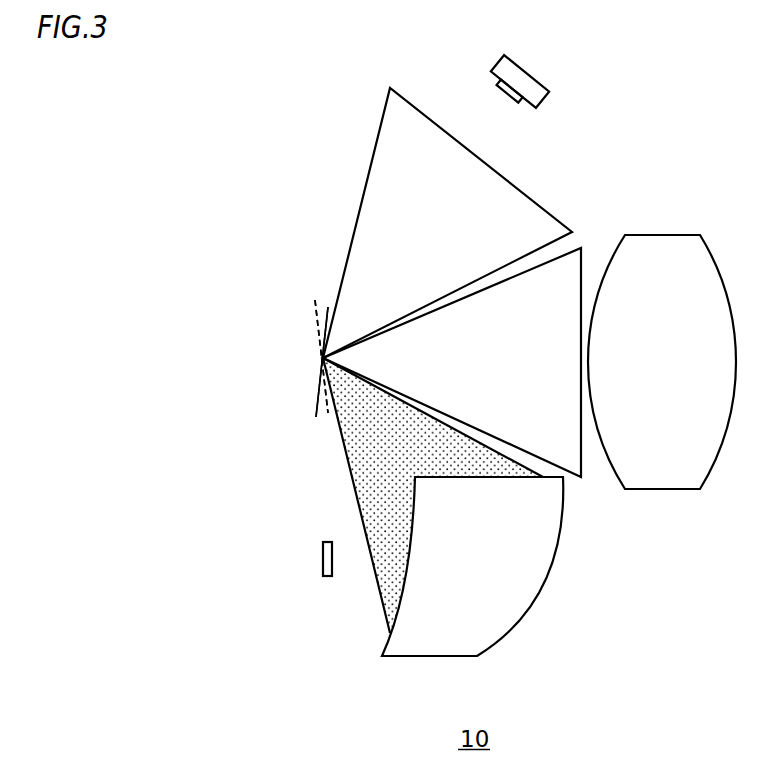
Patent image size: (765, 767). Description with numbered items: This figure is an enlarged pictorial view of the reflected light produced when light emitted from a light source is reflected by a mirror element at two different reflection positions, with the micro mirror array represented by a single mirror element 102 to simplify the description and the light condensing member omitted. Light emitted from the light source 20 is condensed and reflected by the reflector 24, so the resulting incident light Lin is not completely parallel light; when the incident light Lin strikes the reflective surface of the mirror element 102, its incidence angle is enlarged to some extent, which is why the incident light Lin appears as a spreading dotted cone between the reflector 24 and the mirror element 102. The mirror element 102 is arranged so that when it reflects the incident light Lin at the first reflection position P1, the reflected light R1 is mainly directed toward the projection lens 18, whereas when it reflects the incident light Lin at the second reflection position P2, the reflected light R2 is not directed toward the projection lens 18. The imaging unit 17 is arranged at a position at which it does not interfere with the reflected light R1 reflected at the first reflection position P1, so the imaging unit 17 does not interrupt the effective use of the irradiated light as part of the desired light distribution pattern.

The imaging unit 17 is at (548, 101).
The projection lens 18 is at (667, 233).
The light source 20 is at (320, 558).
The reflector 24 is at (527, 610).
The mirror element 102 is at (306, 361).
The reflected light R1 is at (568, 273).
The reflected light R2 is at (395, 125).
The first reflection position P1 is at (311, 436).
The second reflection position P2 is at (311, 289).
The incident light Lin is at (377, 497).